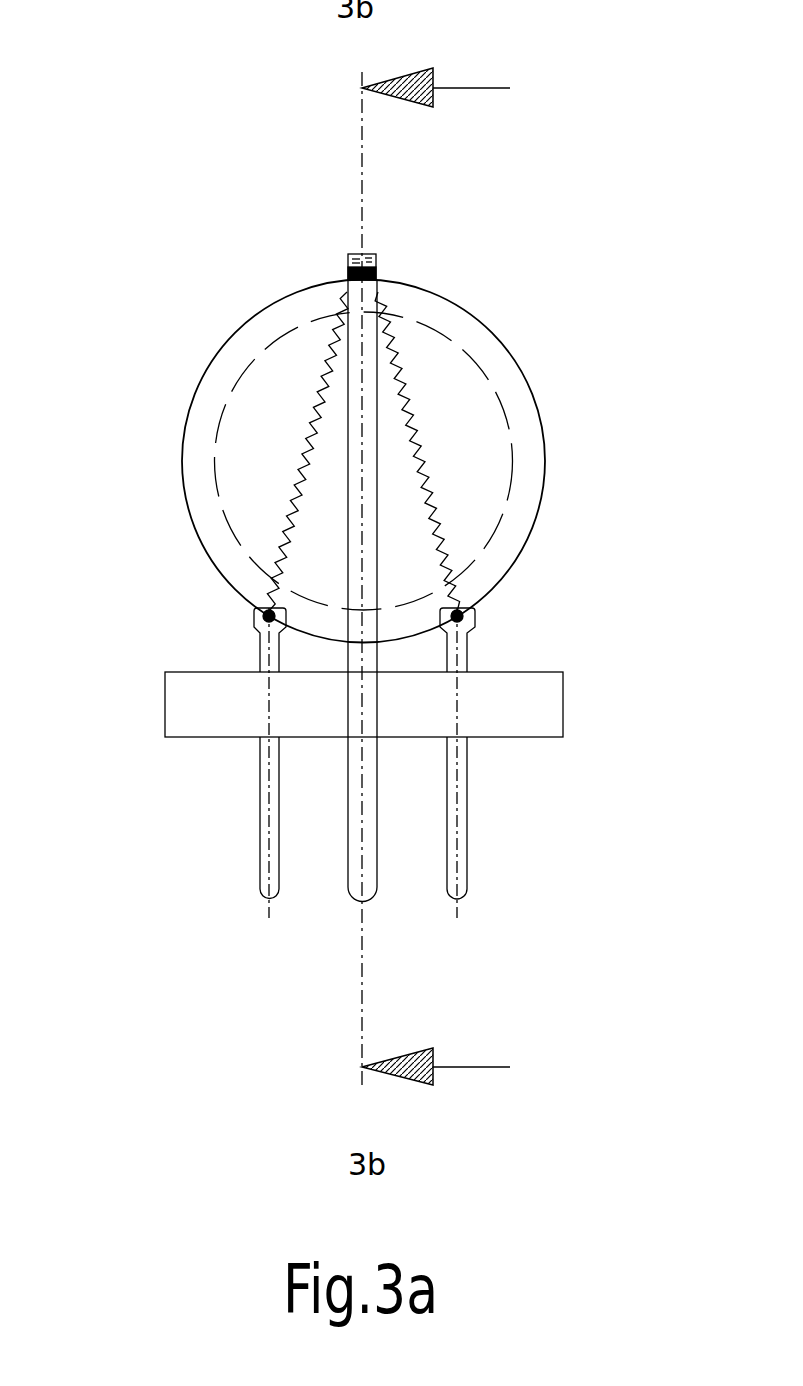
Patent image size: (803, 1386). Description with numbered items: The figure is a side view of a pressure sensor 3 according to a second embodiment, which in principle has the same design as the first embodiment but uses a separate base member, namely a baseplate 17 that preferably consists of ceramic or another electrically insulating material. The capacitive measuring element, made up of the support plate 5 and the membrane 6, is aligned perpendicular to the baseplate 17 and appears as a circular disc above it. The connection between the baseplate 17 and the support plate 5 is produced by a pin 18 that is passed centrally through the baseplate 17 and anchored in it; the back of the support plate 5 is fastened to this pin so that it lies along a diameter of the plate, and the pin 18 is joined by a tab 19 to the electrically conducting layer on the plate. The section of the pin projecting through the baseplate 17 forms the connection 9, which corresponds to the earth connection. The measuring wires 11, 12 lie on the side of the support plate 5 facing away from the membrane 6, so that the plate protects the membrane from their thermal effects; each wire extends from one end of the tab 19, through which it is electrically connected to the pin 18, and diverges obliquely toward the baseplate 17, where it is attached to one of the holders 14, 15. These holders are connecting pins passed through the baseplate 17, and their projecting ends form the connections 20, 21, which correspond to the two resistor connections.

The sensor device 3 is at (298, 262).
The support plate 5 is at (423, 461).
The membrane 6 is at (440, 461).
The connection 9 is at (265, 631).
The measuring wire 11 is at (208, 383).
The measuring wire 12 is at (520, 385).
The holder 14 is at (177, 734).
The holder 15 is at (552, 737).
The baseplate 17 is at (415, 729).
The pin 18 is at (222, 591).
The tab 19 is at (421, 219).
The connection 20 is at (173, 827).
The connection 21 is at (556, 828).